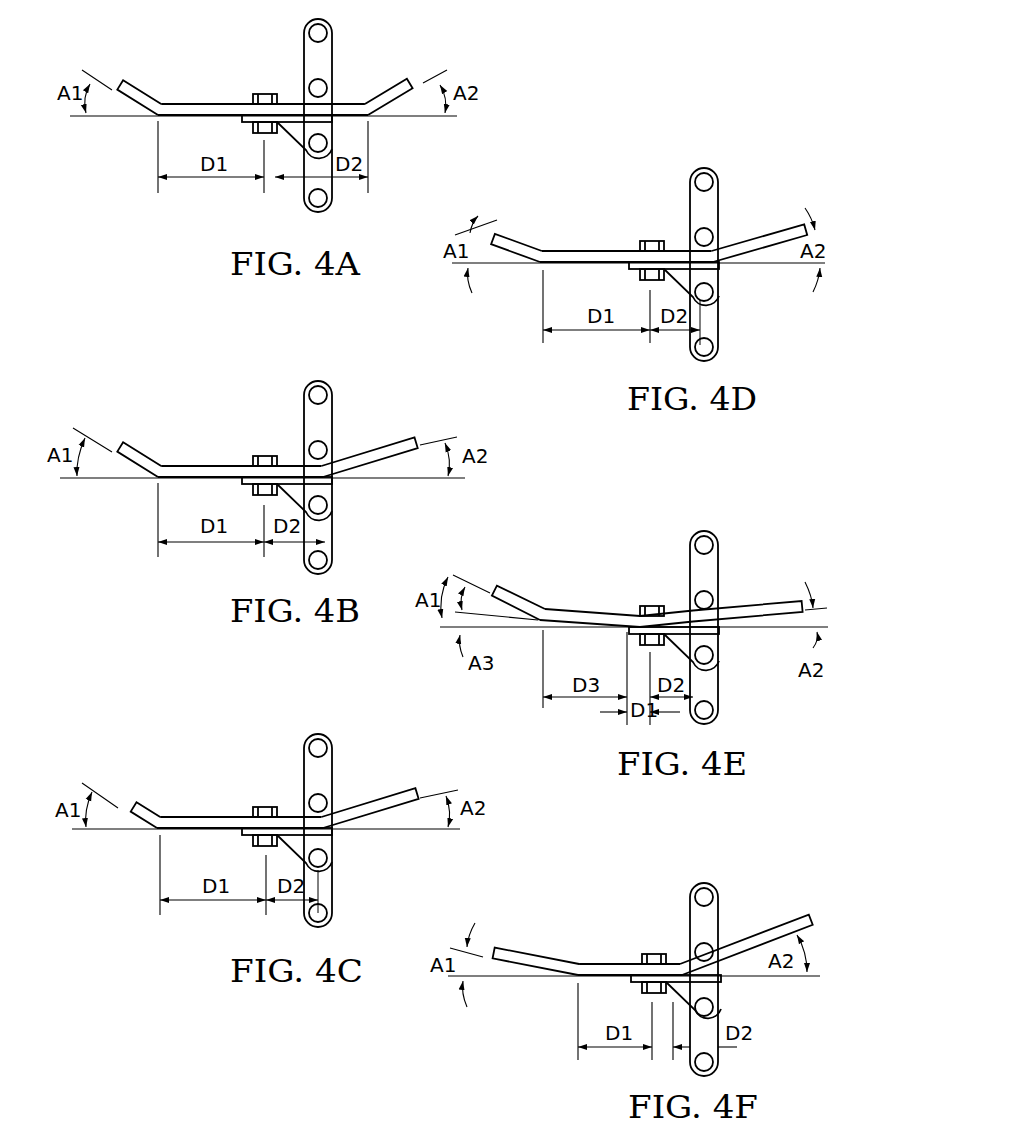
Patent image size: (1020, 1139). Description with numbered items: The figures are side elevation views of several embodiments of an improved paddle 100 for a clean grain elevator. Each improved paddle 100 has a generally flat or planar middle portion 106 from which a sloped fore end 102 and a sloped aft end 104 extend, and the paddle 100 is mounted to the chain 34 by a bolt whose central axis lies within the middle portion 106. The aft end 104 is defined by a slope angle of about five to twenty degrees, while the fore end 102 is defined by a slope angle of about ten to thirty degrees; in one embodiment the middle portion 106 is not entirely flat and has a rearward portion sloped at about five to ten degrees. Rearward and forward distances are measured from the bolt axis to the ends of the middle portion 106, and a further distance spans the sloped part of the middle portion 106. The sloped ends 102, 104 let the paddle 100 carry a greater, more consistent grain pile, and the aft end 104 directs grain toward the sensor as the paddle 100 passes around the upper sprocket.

In FIG. 4A, the chain 34 is at (328, 53).
In FIG. 4B, the chain 34 is at (332, 413).
In FIG. 4C, the chain 34 is at (328, 770).
In FIG. 4D, the chain 34 is at (693, 202).
In FIG. 4E, the chain 34 is at (695, 565).
In FIG. 4F, the chain 34 is at (697, 918).
In FIG. 4A, the improved paddle 100 is at (260, 115).
In FIG. 4B, the improved paddle 100 is at (264, 477).
In FIG. 4C, the improved paddle 100 is at (260, 830).
In FIG. 4D, the improved paddle 100 is at (649, 245).
In FIG. 4E, the improved paddle 100 is at (647, 601).
In FIG. 4F, the improved paddle 100 is at (653, 952).
In FIG. 4A, the sloped fore end 102 is at (395, 88).
In FIG. 4B, the sloped fore end 102 is at (402, 442).
In FIG. 4C, the sloped fore end 102 is at (402, 795).
In FIG. 4D, the sloped fore end 102 is at (790, 222).
In FIG. 4E, the sloped fore end 102 is at (793, 595).
In FIG. 4F, the sloped fore end 102 is at (785, 918).
In FIG. 4A, the sloped aft end 104 is at (125, 86).
In FIG. 4B, the sloped aft end 104 is at (130, 448).
In FIG. 4C, the sloped aft end 104 is at (147, 805).
In FIG. 4D, the sloped aft end 104 is at (520, 238).
In FIG. 4E, the sloped aft end 104 is at (530, 605).
In FIG. 4F, the sloped aft end 104 is at (530, 953).
In FIG. 4A, the middle portion 106 is at (187, 110).
In FIG. 4B, the middle portion 106 is at (188, 470).
In FIG. 4C, the middle portion 106 is at (218, 822).
In FIG. 4D, the middle portion 106 is at (595, 260).
In FIG. 4E, the middle portion 106 is at (677, 615).
In FIG. 4F, the middle portion 106 is at (620, 970).